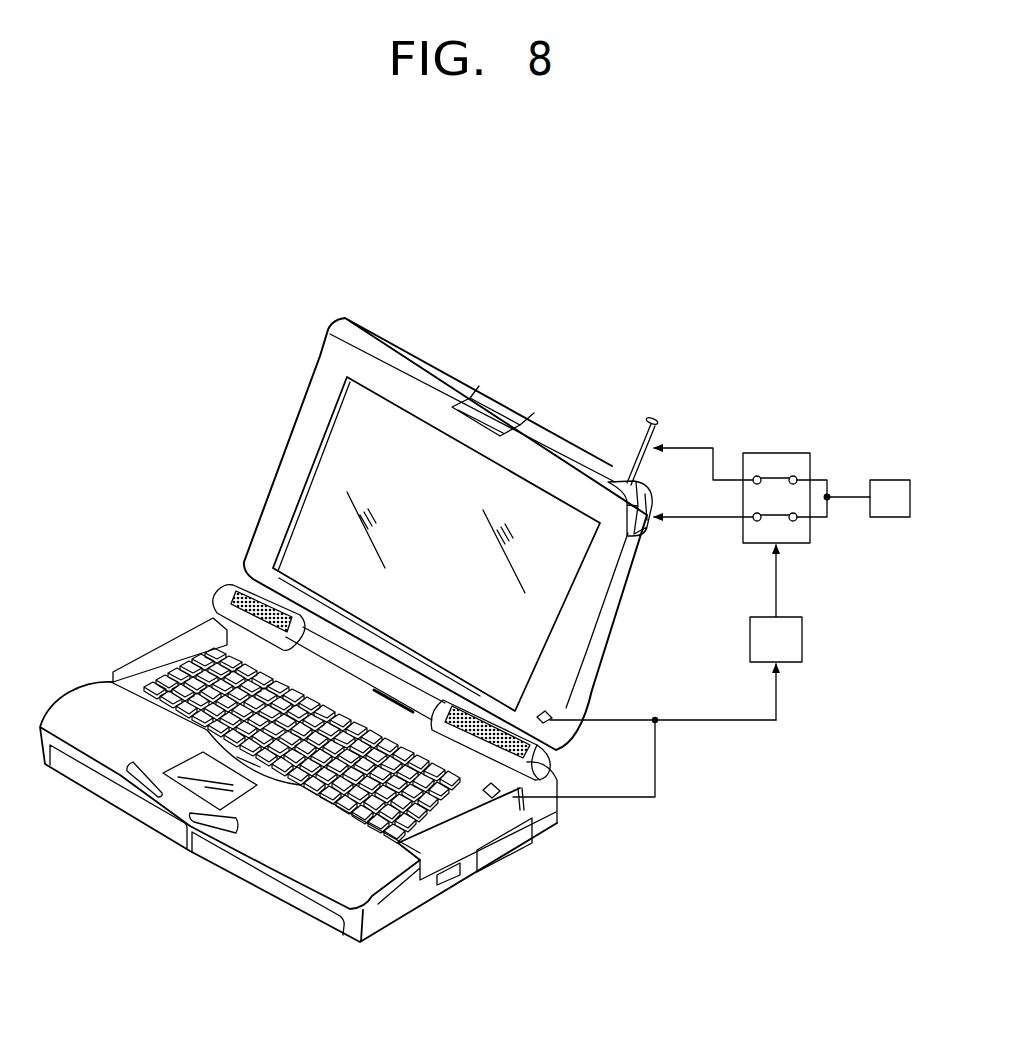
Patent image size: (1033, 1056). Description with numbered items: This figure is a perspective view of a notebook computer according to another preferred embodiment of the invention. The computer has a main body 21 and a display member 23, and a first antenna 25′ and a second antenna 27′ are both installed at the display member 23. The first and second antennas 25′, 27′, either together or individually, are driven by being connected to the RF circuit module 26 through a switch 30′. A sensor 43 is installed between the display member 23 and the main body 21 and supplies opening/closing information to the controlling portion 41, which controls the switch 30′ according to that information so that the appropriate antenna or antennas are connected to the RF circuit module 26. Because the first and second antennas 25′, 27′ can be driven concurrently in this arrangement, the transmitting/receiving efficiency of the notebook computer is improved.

The main body 21 is at (80, 697).
The display member 23 is at (292, 475).
The first antenna 25′ is at (654, 418).
The RF circuit module 26 is at (890, 480).
The second antenna 27′ is at (623, 477).
The switch 30′ is at (777, 453).
The controlling portion 41 is at (802, 640).
The sensor 43 is at (515, 790).